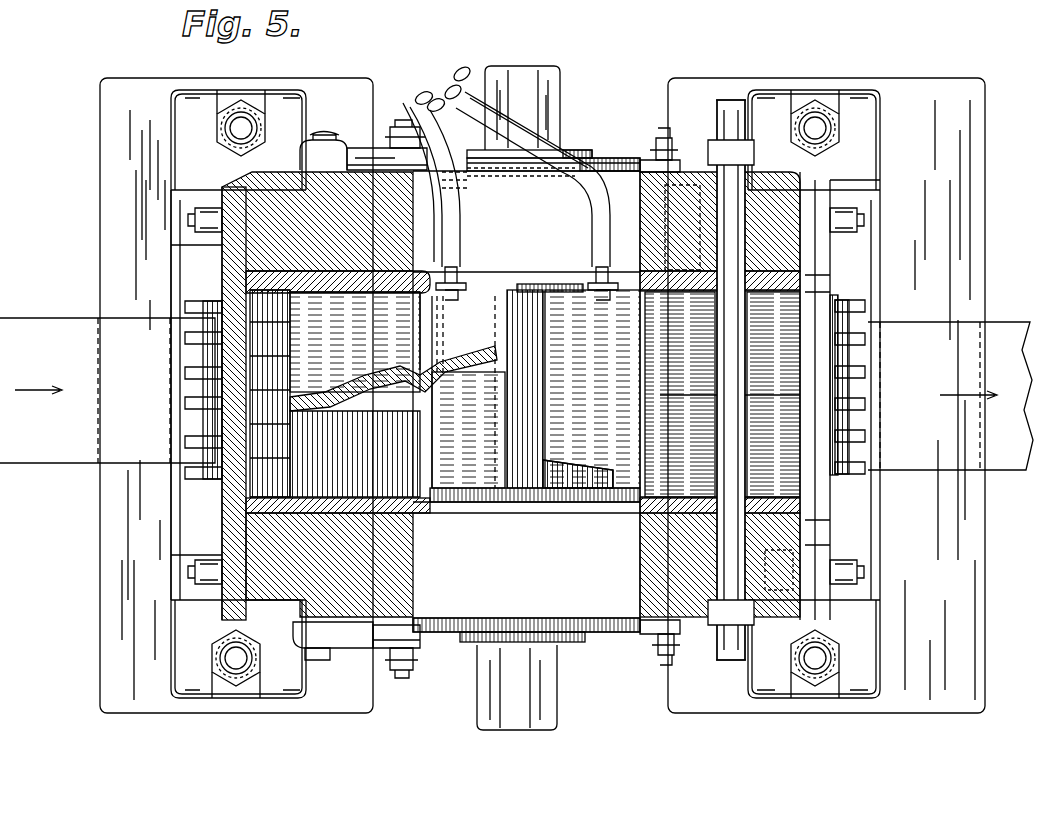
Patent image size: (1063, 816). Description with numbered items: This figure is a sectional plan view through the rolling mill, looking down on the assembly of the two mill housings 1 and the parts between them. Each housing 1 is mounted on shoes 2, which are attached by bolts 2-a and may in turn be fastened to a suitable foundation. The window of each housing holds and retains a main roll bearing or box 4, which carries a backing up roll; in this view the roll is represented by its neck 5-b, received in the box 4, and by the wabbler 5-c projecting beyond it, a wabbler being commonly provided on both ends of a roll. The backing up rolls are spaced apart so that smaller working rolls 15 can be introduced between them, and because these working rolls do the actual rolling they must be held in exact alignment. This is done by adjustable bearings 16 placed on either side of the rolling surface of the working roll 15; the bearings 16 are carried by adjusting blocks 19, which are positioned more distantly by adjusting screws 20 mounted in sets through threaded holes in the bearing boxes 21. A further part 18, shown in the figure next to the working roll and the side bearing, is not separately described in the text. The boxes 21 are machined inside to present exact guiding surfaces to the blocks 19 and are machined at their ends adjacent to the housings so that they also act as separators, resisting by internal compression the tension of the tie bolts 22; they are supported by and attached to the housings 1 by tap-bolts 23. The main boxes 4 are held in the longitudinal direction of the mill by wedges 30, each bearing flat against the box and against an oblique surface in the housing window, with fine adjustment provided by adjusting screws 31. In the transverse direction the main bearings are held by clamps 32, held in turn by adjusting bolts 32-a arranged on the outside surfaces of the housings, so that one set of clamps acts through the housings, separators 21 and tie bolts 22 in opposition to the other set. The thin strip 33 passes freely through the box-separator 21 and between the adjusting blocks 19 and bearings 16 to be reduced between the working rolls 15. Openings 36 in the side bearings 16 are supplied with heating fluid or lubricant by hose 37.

The mill housing 1 is at (773, 180).
The shoes 2 is at (122, 118).
The bolts 2-a is at (239, 126).
The main roll bearings or boxes 4 is at (598, 165).
The roll neck 5-b is at (578, 140).
The wabbler 5-c is at (535, 72).
The working rolls 15 is at (525, 397).
The adjustable bearings 16 is at (600, 447).
The impeller 18 is at (398, 400).
The adjusting blocks 19 is at (338, 310).
The adjusting screws 20 is at (208, 304).
The bearing boxes or separators 21 is at (232, 264).
The tie bolts 22 is at (325, 133).
The tap-bolts 23 is at (195, 218).
The wedges 30 is at (645, 160).
The adjusting screws 31 is at (664, 135).
The clamps 32 is at (368, 155).
The adjusting bolts 32-a is at (398, 125).
The strip 33 is at (40, 325).
The openings 36 is at (452, 380).
The hose 37 is at (422, 98).